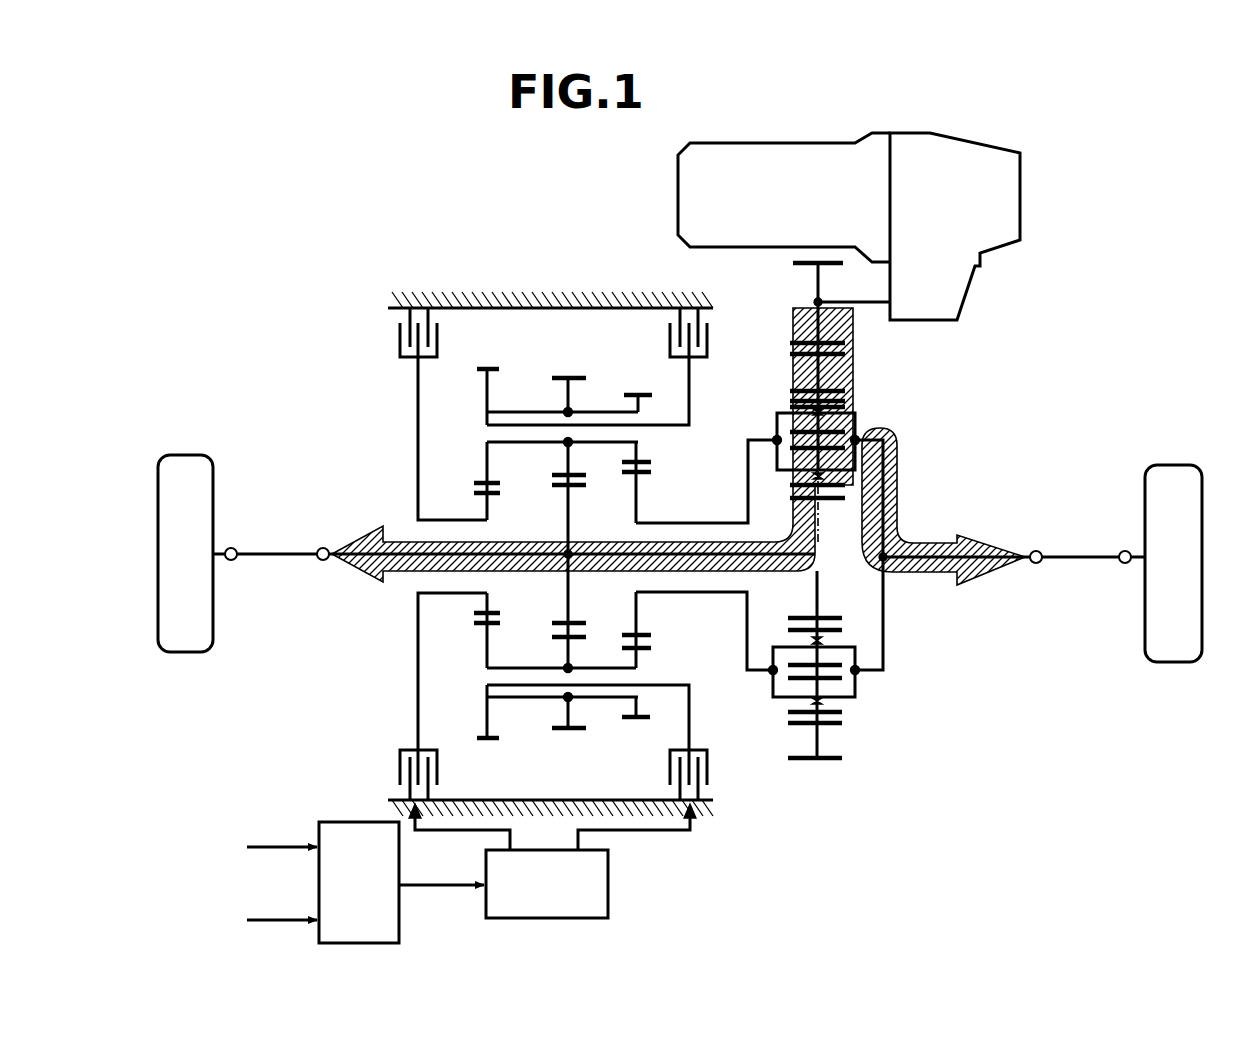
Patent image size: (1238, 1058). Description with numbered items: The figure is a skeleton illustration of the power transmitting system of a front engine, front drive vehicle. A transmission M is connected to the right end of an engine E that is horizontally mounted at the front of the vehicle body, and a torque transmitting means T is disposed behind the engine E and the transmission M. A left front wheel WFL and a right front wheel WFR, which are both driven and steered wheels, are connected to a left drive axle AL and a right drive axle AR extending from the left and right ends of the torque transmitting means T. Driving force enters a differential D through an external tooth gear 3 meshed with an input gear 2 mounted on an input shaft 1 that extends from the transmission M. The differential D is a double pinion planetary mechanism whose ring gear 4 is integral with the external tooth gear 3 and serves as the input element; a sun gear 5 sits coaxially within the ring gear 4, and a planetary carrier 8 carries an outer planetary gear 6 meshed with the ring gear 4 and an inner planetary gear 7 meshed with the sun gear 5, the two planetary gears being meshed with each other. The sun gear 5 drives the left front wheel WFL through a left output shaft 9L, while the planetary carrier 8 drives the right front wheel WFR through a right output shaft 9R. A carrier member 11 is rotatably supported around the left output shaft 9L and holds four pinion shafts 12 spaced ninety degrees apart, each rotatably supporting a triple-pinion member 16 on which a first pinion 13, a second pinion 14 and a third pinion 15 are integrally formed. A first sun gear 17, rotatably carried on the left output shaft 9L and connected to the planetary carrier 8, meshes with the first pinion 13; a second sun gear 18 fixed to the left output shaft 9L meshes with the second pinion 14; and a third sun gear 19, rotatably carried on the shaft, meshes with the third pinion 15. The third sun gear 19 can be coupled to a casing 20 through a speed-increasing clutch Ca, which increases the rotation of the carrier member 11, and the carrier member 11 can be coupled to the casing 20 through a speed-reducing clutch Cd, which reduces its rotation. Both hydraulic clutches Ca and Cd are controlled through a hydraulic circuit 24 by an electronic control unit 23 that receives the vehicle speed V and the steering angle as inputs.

The input shaft 1 is at (848, 302).
The input gear 2 is at (793, 266).
The external tooth gear 3 is at (793, 352).
The ring gear 4 is at (793, 392).
The sun gear 5 is at (821, 637).
The outer planetary gear 6 is at (793, 407).
The inner planetary gear 7 is at (790, 490).
The planetary carrier 8 is at (748, 458).
The left output shaft 9L is at (400, 530).
The right output shaft 9R is at (962, 545).
The carrier member 11 is at (670, 683).
The pinion shaft 12 is at (487, 424).
The first pinion 13 is at (638, 394).
The second pinion 14 is at (566, 378).
The third pinion 15 is at (487, 369).
The triple-pinion member 16 is at (524, 405).
The first sun gear 17 is at (651, 476).
The second sun gear 18 is at (583, 490).
The third sun gear 19 is at (500, 495).
The casing 20 is at (528, 305).
The electronic control unit 23 is at (374, 896).
The hydraulic circuit 24 is at (564, 898).
The engine E is at (790, 206).
The transmission M is at (956, 219).
The differential D is at (898, 406).
The torque transmitting means T is at (483, 238).
The speed-increasing clutch Ca is at (398, 340).
The speed-reducing clutch Cd is at (708, 338).
The left front wheel WFL is at (183, 455).
The right front wheel WFR is at (1177, 465).
The left drive axle AL is at (276, 548).
The right drive axle AR is at (1082, 555).
The vehicle speed V is at (282, 830).